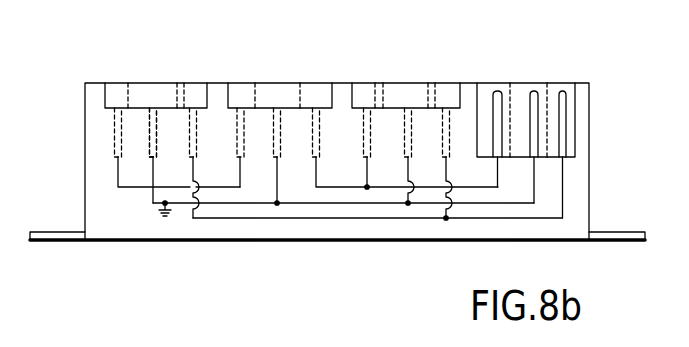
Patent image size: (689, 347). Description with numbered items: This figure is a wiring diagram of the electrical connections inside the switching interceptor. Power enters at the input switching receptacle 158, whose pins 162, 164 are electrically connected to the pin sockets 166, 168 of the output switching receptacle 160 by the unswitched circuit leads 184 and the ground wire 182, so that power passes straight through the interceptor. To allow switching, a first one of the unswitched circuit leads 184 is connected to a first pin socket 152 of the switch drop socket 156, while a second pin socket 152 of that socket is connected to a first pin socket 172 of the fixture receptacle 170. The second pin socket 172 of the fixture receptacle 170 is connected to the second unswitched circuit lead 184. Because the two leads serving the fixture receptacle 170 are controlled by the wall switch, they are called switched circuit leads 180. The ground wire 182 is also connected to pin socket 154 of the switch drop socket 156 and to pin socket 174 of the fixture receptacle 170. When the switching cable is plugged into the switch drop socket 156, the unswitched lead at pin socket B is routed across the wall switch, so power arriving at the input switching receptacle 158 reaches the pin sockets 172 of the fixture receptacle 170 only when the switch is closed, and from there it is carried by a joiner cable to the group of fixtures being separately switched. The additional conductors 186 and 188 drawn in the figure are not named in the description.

The pin socket 152 is at (315, 125).
The pin socket 154 is at (270, 150).
The switch drop socket 156 is at (285, 83).
The input switching receptacle 158 is at (518, 85).
The output switching receptacle 160 is at (420, 83).
The pin 162 is at (498, 153).
The pin 164 is at (535, 102).
The pin socket 166 is at (410, 140).
The pin socket 168 is at (450, 125).
The fixture receptacle 170 is at (158, 66).
The pin socket 172 is at (117, 130).
The pin socket 174 is at (156, 140).
The switched circuit lead 180 is at (117, 167).
The ground wire 182 is at (153, 192).
The unswitched circuit lead 184 is at (482, 190).
The pin lead wire 186 is at (318, 175).
The common conductor 188 is at (277, 184).